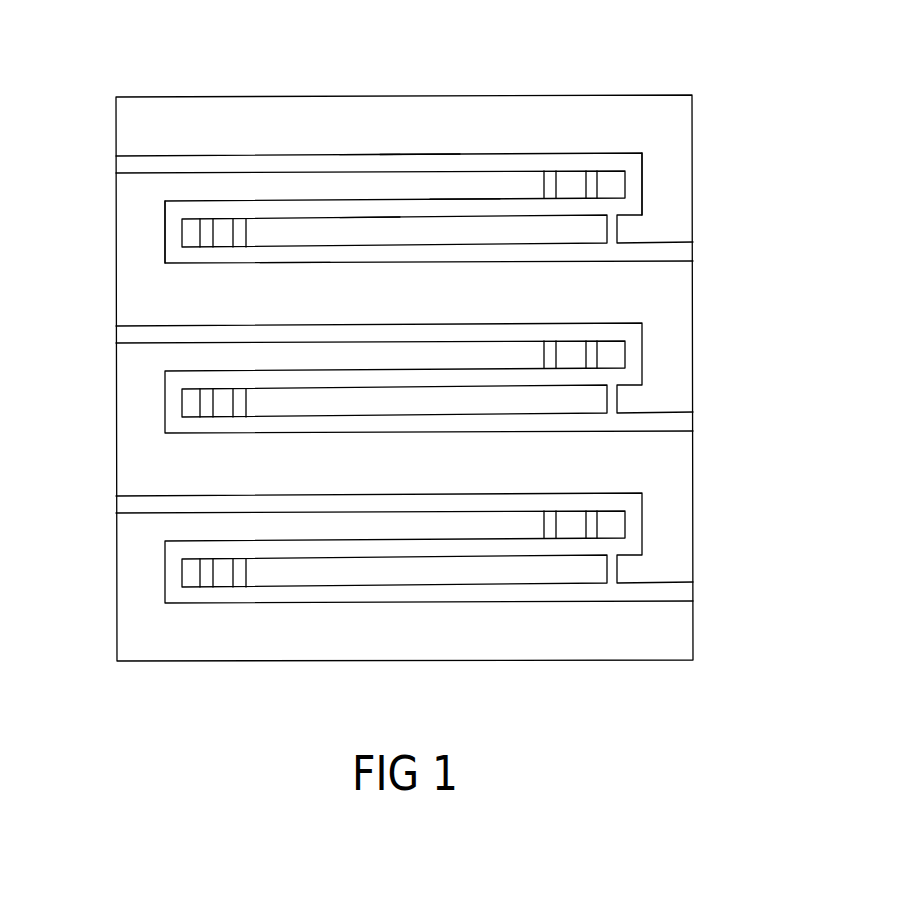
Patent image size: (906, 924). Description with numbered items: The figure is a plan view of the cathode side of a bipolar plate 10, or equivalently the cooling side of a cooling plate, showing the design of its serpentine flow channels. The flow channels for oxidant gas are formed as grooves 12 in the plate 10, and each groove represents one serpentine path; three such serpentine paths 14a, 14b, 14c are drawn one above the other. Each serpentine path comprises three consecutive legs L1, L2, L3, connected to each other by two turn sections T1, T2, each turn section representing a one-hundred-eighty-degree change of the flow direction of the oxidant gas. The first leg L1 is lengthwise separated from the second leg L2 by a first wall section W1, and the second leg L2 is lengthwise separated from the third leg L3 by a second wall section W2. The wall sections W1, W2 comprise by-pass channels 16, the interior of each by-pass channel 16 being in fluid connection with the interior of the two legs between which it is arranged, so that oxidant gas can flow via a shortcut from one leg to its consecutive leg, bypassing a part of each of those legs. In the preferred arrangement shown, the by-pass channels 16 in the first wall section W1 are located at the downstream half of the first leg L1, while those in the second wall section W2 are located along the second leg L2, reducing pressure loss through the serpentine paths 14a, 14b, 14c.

The plate 10 is at (270, 79).
The groove 12 is at (148, 168).
The serpentine path 14a is at (550, 253).
The serpentine path 14b is at (513, 420).
The serpentine path 14c is at (530, 593).
The by-pass channel 16 is at (592, 184).
The first turn section T1 is at (650, 190).
The second turn section T2 is at (140, 221).
The first wall section W1 is at (365, 187).
The second wall section W2 is at (367, 236).
The first leg L1 is at (418, 163).
The second leg L2 is at (458, 207).
The third leg L3 is at (295, 253).